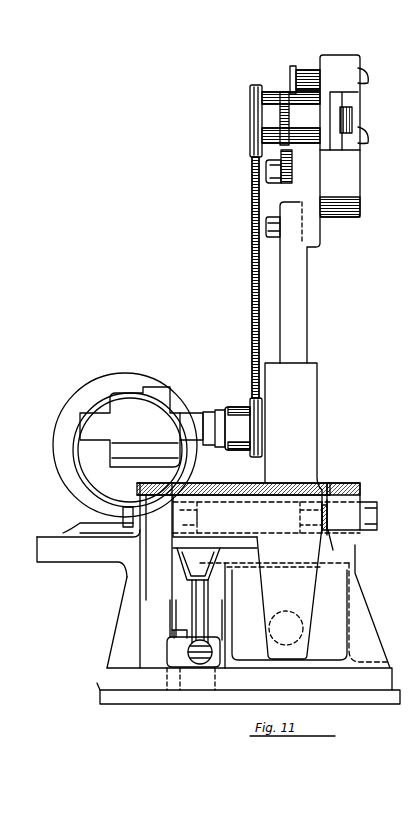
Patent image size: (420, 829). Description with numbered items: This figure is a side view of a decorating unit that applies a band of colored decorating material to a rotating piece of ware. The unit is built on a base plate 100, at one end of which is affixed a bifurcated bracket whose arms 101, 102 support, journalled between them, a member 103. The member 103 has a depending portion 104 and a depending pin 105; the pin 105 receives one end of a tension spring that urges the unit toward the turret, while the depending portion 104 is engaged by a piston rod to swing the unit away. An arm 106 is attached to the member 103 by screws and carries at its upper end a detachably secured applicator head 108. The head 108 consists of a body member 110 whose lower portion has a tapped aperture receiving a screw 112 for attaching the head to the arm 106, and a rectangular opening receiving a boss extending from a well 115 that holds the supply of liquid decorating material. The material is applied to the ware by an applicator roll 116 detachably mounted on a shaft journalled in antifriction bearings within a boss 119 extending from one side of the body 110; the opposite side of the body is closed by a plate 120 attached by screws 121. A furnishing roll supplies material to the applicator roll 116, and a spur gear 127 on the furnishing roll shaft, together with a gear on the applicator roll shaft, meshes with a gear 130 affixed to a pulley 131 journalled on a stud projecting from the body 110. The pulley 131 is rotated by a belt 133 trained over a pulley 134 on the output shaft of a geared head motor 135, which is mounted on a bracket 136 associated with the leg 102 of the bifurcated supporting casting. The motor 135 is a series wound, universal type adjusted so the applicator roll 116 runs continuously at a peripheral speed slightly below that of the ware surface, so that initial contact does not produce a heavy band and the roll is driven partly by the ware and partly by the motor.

The base plate 100 is at (225, 694).
The arm of bifurcated bracket 101 is at (352, 562).
The arm of bifurcated bracket 102 is at (148, 578).
The member 103 is at (305, 462).
The depending portion 104 is at (249, 608).
The depending pin 105 is at (205, 618).
The arm 106 is at (305, 343).
The applicator head 108 is at (360, 177).
The body member 110 is at (341, 102).
The screw 112 is at (266, 224).
The well 115 is at (341, 175).
The applicator roll 116 is at (345, 97).
The boss 119 is at (292, 117).
The plate 120 is at (360, 107).
The screws 121 is at (365, 131).
The spur gear 127 is at (287, 183).
The gear 130 is at (283, 92).
The pulley 131 is at (250, 125).
The belt 133 is at (252, 293).
The pulley 134 is at (262, 416).
The geared head motor 135 is at (173, 395).
The bracket 136 is at (80, 557).